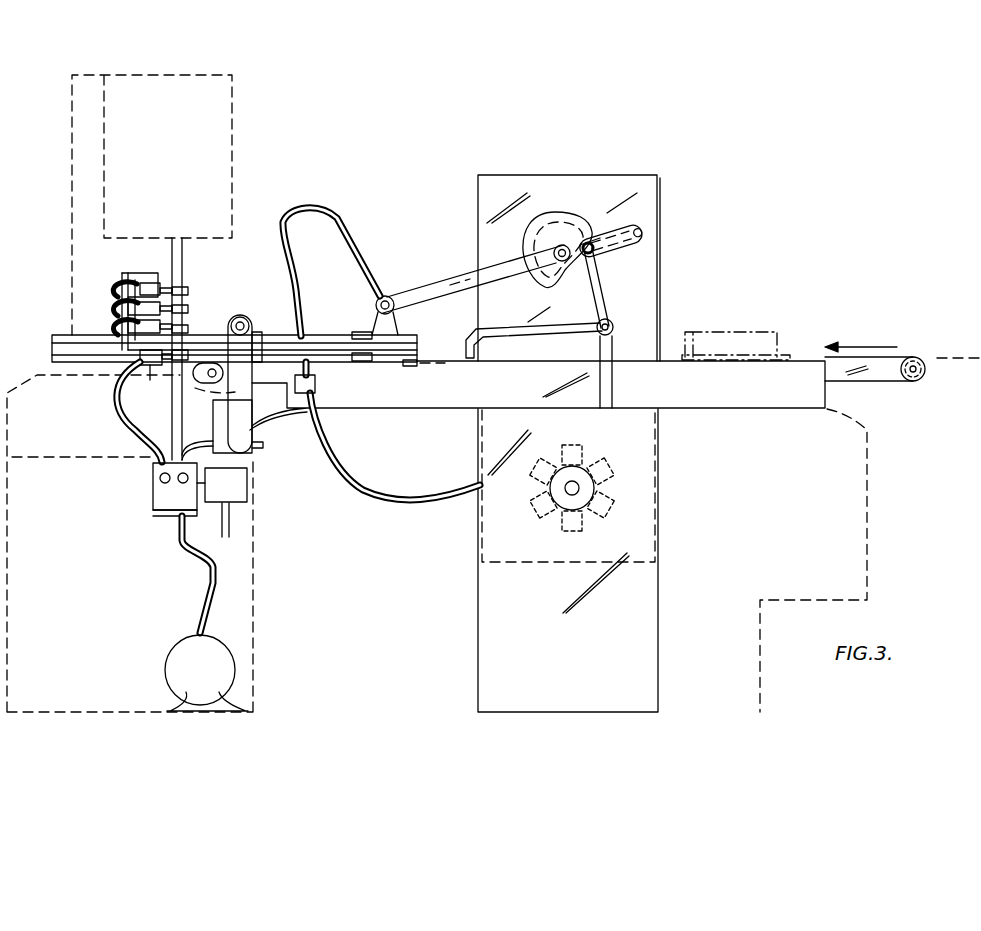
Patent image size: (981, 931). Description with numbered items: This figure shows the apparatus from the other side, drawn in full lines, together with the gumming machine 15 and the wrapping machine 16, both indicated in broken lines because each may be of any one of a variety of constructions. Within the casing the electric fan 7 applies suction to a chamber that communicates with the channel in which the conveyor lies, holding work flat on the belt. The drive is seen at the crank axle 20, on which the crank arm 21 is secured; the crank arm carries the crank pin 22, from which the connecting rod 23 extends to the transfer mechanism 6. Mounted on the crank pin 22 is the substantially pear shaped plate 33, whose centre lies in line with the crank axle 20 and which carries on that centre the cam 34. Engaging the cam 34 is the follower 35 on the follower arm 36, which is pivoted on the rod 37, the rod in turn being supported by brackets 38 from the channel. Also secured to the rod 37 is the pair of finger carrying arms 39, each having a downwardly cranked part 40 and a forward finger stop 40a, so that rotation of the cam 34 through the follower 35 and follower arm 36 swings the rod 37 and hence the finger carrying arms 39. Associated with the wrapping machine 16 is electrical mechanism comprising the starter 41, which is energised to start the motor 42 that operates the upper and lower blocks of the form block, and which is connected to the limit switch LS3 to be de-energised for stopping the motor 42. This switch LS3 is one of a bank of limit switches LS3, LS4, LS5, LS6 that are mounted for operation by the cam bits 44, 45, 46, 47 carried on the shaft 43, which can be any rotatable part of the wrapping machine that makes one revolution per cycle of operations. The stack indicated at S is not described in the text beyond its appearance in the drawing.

The transfer mechanism 6 is at (354, 299).
The electric fan 7 is at (613, 492).
The gumming machine 15 is at (978, 352).
The wrapping machine 16 is at (72, 188).
The crank axle 20 is at (563, 250).
The crank arm 21 is at (587, 243).
The crank pin 22 is at (655, 232).
The connecting rod 23 is at (430, 290).
The pear shaped plate 33 is at (598, 262).
The cam 34 is at (540, 218).
The follower 35 is at (600, 244).
The follower arm 36 is at (607, 305).
The rod 37 is at (614, 329).
The brackets 38 is at (603, 368).
The finger carrying arms 39 is at (520, 333).
The downwardly cranked part 40 is at (470, 345).
The forward finger stop 40a is at (407, 366).
The starter 41 is at (170, 503).
The motor 42 is at (215, 670).
The shaft 43 is at (172, 258).
The cam bit 44 is at (183, 372).
The cam bit 45 is at (188, 329).
The cam bit 46 is at (188, 309).
The cam bit 47 is at (188, 290).
The limit switch LS3 is at (150, 380).
The limit switch LS4 is at (128, 326).
The limit switch LS5 is at (128, 306).
The limit switch LS6 is at (150, 290).
The sheet stack S is at (752, 329).